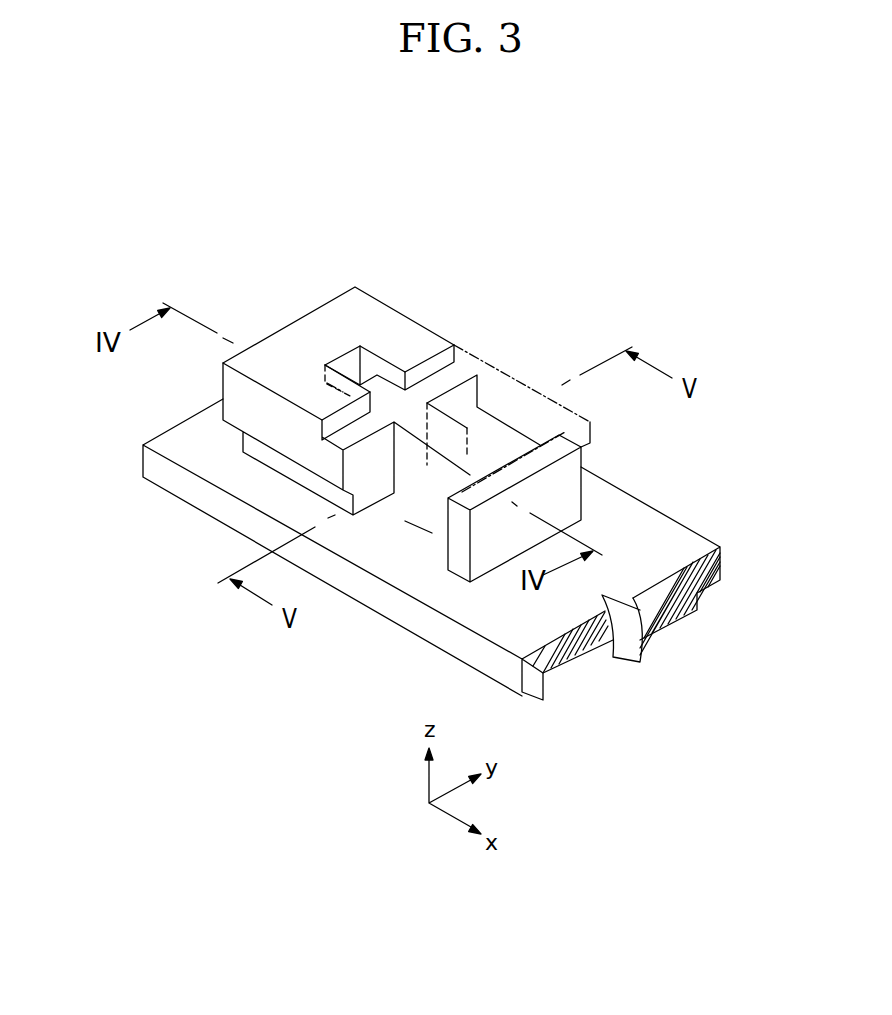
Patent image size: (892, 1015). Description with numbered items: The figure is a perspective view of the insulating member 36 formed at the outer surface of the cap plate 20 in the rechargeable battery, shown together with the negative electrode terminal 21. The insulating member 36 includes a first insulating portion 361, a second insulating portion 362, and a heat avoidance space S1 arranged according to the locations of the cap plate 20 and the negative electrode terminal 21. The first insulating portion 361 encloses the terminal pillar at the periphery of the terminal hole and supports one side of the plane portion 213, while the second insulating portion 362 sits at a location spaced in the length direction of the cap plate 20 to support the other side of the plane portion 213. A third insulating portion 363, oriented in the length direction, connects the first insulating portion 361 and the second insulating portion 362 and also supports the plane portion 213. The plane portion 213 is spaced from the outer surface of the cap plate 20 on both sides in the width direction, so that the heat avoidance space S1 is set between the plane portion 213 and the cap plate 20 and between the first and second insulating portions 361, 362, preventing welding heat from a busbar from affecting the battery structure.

The insulating member 36 is at (452, 498).
The first insulating portion 361 is at (230, 384).
The second insulating portion 362 is at (563, 485).
The third insulating portion 363 is at (477, 443).
The cap plate 20 is at (207, 497).
The negative electrode terminal 21 is at (462, 399).
The plane portion 213 is at (507, 370).
The heat avoidance space S1 is at (406, 521).